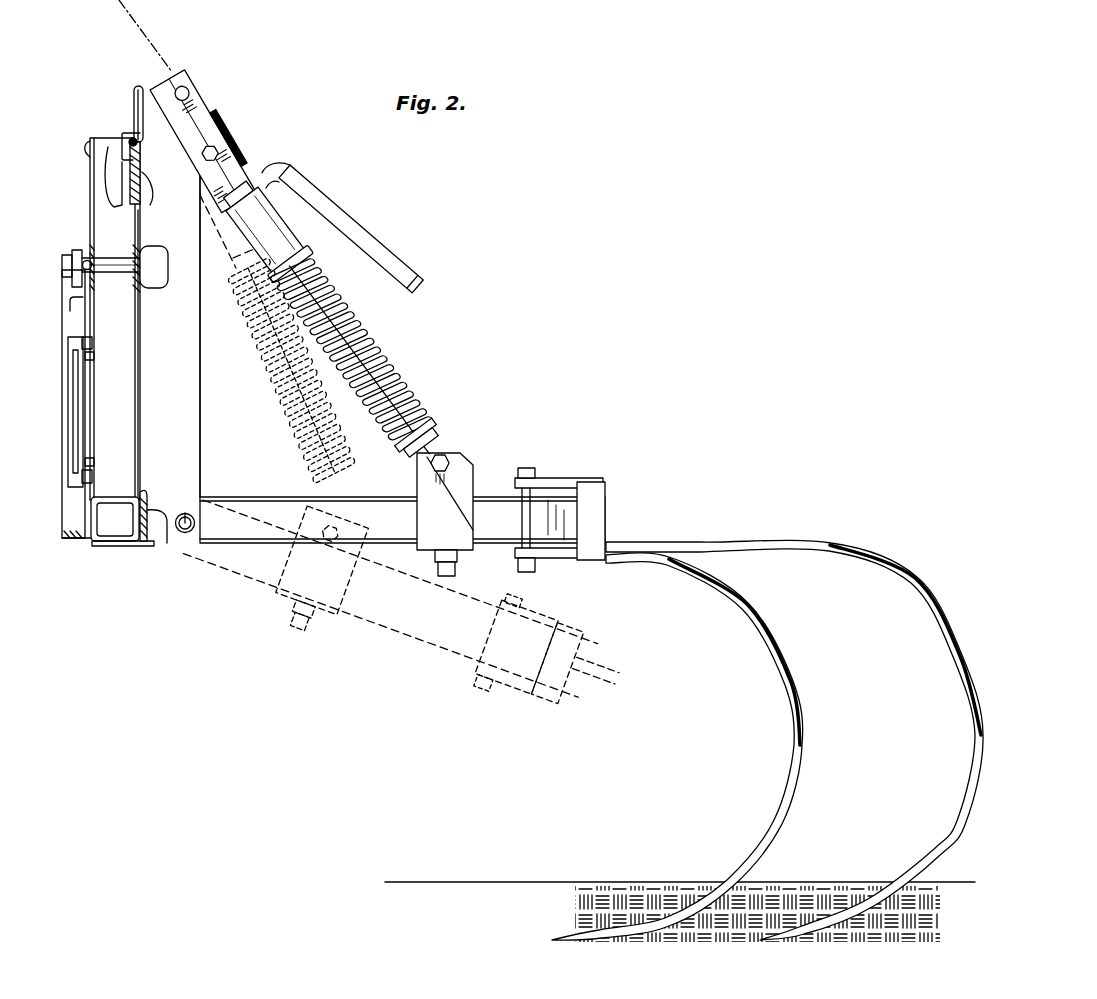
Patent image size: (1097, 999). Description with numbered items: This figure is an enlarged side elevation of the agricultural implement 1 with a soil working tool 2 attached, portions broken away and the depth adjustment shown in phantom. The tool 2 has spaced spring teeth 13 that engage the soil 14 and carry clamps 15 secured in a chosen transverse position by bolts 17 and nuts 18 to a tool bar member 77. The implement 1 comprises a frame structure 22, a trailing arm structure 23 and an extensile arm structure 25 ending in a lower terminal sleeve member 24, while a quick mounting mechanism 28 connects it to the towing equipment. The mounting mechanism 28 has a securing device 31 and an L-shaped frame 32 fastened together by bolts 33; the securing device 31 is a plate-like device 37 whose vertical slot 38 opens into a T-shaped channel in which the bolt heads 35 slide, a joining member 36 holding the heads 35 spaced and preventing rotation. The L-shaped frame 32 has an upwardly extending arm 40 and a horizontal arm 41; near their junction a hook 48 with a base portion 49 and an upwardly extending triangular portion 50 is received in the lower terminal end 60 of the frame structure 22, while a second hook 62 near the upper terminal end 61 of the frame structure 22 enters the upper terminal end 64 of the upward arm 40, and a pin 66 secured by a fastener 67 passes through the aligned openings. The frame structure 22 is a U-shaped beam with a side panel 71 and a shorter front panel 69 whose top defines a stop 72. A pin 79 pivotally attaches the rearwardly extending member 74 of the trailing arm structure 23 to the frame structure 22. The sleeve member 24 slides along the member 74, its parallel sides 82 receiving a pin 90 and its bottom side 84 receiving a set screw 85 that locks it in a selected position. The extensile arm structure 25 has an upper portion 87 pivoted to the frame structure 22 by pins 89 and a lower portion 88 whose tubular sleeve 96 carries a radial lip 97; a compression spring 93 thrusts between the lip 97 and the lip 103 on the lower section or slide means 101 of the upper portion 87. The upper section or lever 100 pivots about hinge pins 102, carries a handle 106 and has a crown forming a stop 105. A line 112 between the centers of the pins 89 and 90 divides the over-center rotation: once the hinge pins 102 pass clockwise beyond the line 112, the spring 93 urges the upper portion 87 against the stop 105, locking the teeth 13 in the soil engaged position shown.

The agricultural implement 1 is at (356, 228).
The soil engaging tool 2 is at (760, 740).
The spring teeth 13 is at (790, 680).
The soil 14 is at (622, 892).
The clamps 15 is at (602, 486).
The bolts 17 is at (529, 468).
The nuts 18 is at (525, 570).
The frame structure 22 is at (218, 334).
The trailing arm structure 23 is at (394, 579).
The sleeve member 24 is at (476, 455).
The extensile arm structure 25 is at (353, 312).
The quick mounting mechanism 28 is at (116, 309).
The securing device 31 is at (70, 536).
The L-shaped frame 32 is at (91, 181).
The bolts 33 is at (93, 345).
The bolt heads 35 is at (95, 357).
The joining member 36 is at (80, 390).
The plate-like device 37 is at (84, 300).
The slot 38 is at (86, 418).
The upwardly extending arm 40 is at (134, 350).
The horizontal arm 41 is at (88, 548).
The hook 48 is at (118, 547).
The base portion 49 is at (141, 550).
The triangular portion 50 is at (150, 545).
The lower terminal end 60 is at (172, 546).
The upper terminal end 61 is at (142, 147).
The second hook 62 is at (128, 127).
The upper terminal end 64 is at (89, 143).
The pin 66 is at (166, 268).
The fastener 67 is at (78, 250).
The front panel 69 is at (152, 194).
The side panel 71 is at (190, 321).
The stop 72 is at (138, 92).
The rearwardly extending member 74 is at (280, 497).
The tool bar member 77 is at (555, 566).
The pin 79 is at (190, 512).
The parallel sides 82 is at (380, 531).
The bottom side 84 is at (458, 553).
The set screw 85 is at (450, 573).
The upper portion 87 is at (215, 128).
The lower portion 88 is at (416, 398).
The pivot pins 89 is at (186, 88).
The pin 90 is at (448, 458).
The compression spring 93 is at (357, 325).
The tubular sleeve 96 is at (412, 463).
The radial lip 97 is at (402, 452).
The lever 100 is at (203, 110).
The lower section 101 is at (280, 225).
The hinge pins 102 is at (222, 150).
The lip 103 is at (306, 250).
The stop 105 is at (273, 168).
The handle 106 is at (405, 270).
The line 112 is at (143, 14).